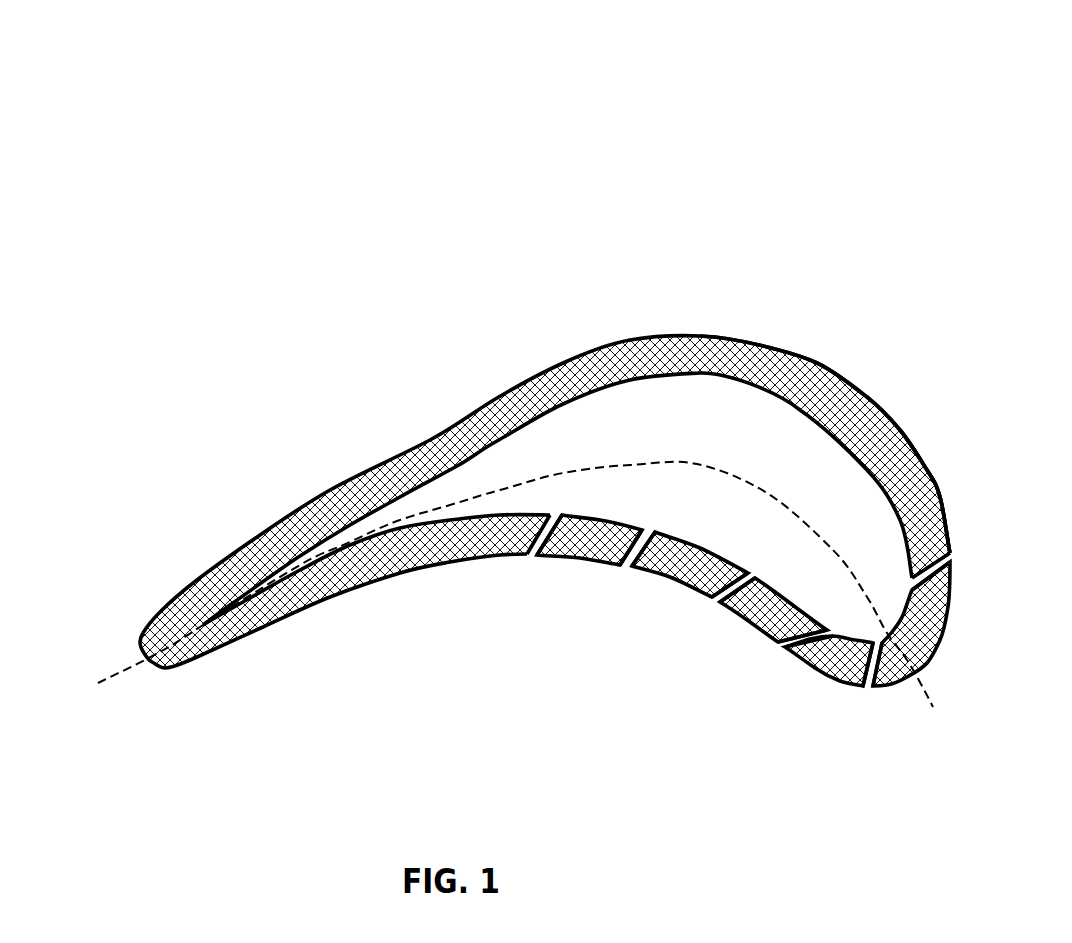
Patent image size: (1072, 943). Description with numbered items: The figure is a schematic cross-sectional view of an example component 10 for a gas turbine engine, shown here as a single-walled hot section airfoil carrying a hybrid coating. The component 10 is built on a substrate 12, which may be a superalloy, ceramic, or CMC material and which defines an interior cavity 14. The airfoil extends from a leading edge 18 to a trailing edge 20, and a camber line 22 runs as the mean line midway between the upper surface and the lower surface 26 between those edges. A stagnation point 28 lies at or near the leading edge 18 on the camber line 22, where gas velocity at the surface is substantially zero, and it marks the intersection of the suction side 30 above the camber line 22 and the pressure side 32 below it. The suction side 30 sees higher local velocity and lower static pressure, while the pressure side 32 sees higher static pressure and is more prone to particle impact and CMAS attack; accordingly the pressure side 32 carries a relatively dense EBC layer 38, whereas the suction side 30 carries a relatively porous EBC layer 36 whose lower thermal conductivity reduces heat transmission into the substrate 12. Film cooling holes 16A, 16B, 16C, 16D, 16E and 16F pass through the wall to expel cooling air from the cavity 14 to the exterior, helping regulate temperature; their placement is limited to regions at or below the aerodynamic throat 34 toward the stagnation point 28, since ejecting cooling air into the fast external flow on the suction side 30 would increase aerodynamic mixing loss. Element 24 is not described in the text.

The component 10 is at (545, 426).
The substrate 12 is at (551, 505).
The cavity 14 is at (630, 423).
The film cooling hole 16A is at (523, 563).
The film cooling hole 16B is at (620, 569).
The film cooling hole 16C is at (712, 603).
The film cooling hole 16D is at (779, 654).
The film cooling hole 16E is at (863, 692).
The slit 16F is at (960, 553).
The leading edge 18 is at (931, 660).
The trailing edge 20 is at (126, 678).
The camber line 22 is at (98, 683).
The suction side 24 is at (227, 552).
The lower surface 26 is at (282, 630).
The stagnation point 28 is at (928, 672).
The suction side 30 is at (790, 300).
The pressure side 32 is at (748, 663).
The aerodynamic throat 34 is at (946, 472).
The relatively porous EBC layer 36 is at (823, 363).
The relatively dense EBC layer 38 is at (829, 681).